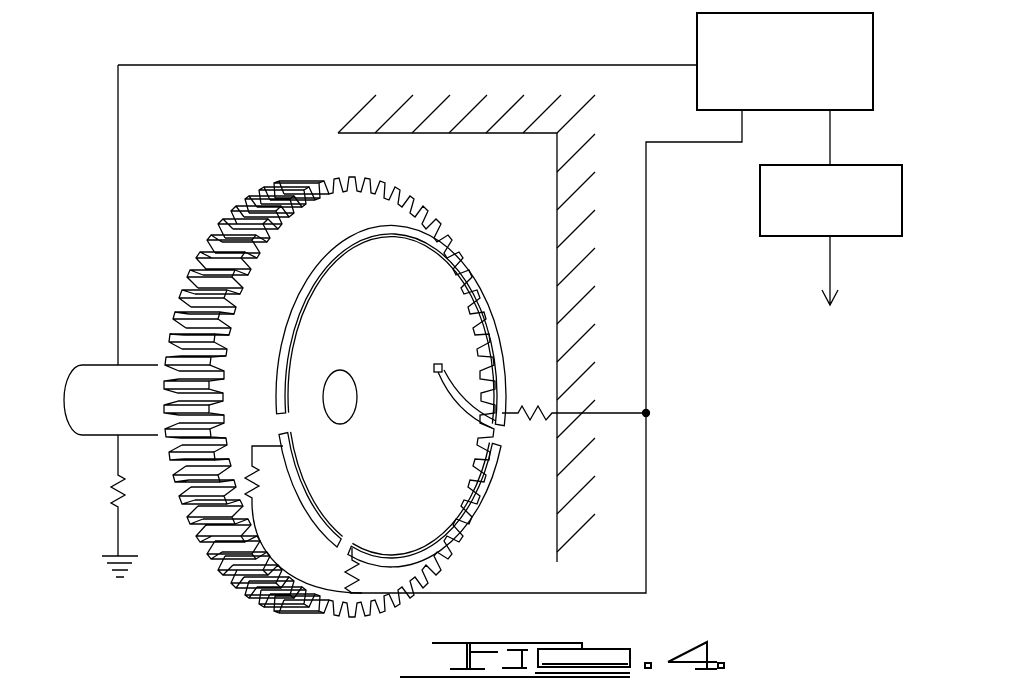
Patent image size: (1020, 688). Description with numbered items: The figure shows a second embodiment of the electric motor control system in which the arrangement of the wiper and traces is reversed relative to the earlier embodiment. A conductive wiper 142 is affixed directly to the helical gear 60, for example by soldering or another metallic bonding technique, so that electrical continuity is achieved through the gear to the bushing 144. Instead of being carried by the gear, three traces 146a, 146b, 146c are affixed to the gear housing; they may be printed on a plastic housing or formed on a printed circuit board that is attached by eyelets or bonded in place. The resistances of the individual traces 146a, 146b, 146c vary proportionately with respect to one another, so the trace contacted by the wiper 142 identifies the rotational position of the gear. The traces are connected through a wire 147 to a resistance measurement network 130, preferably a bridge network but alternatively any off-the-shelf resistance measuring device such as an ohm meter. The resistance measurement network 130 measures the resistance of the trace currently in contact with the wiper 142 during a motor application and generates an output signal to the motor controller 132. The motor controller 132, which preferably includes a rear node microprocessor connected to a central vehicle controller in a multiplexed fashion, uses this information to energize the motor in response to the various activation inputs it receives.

The helical gear 60 is at (280, 287).
The resistance measurement network 130 is at (697, 27).
The motor controller 132 is at (775, 235).
The conductive wiper 142 is at (435, 366).
The bushing 144 is at (82, 366).
The trace 146a is at (445, 263).
The trace 146b is at (302, 488).
The trace 146c is at (367, 553).
The wire 147 is at (648, 507).